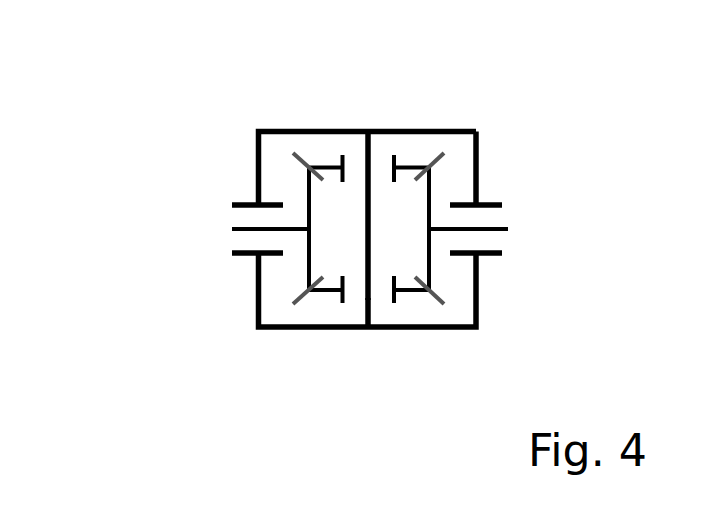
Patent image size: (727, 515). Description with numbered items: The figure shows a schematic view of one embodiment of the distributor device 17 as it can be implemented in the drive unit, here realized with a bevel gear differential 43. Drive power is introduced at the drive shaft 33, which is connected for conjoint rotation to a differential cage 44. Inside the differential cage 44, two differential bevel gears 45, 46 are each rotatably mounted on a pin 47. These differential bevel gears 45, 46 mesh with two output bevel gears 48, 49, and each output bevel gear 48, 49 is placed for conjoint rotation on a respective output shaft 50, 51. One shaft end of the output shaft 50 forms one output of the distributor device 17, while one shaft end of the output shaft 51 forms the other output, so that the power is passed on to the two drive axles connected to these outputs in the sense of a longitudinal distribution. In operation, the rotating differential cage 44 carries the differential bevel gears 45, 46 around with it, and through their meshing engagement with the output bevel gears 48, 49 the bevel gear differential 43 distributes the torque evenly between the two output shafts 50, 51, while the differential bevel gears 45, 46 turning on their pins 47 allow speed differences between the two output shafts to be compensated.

The distributor device 17 is at (155, 130).
The drive shaft 33 is at (368, 131).
The bevel gear differential 43 is at (489, 92).
The differential cage 44 is at (418, 129).
The differential bevel gear 45 is at (330, 166).
The differential bevel gear 46 is at (325, 290).
The pin 47 is at (368, 303).
The output bevel gear 48 is at (308, 195).
The output bevel gear 49 is at (427, 260).
The output shaft 50 is at (242, 229).
The output shaft 51 is at (508, 228).